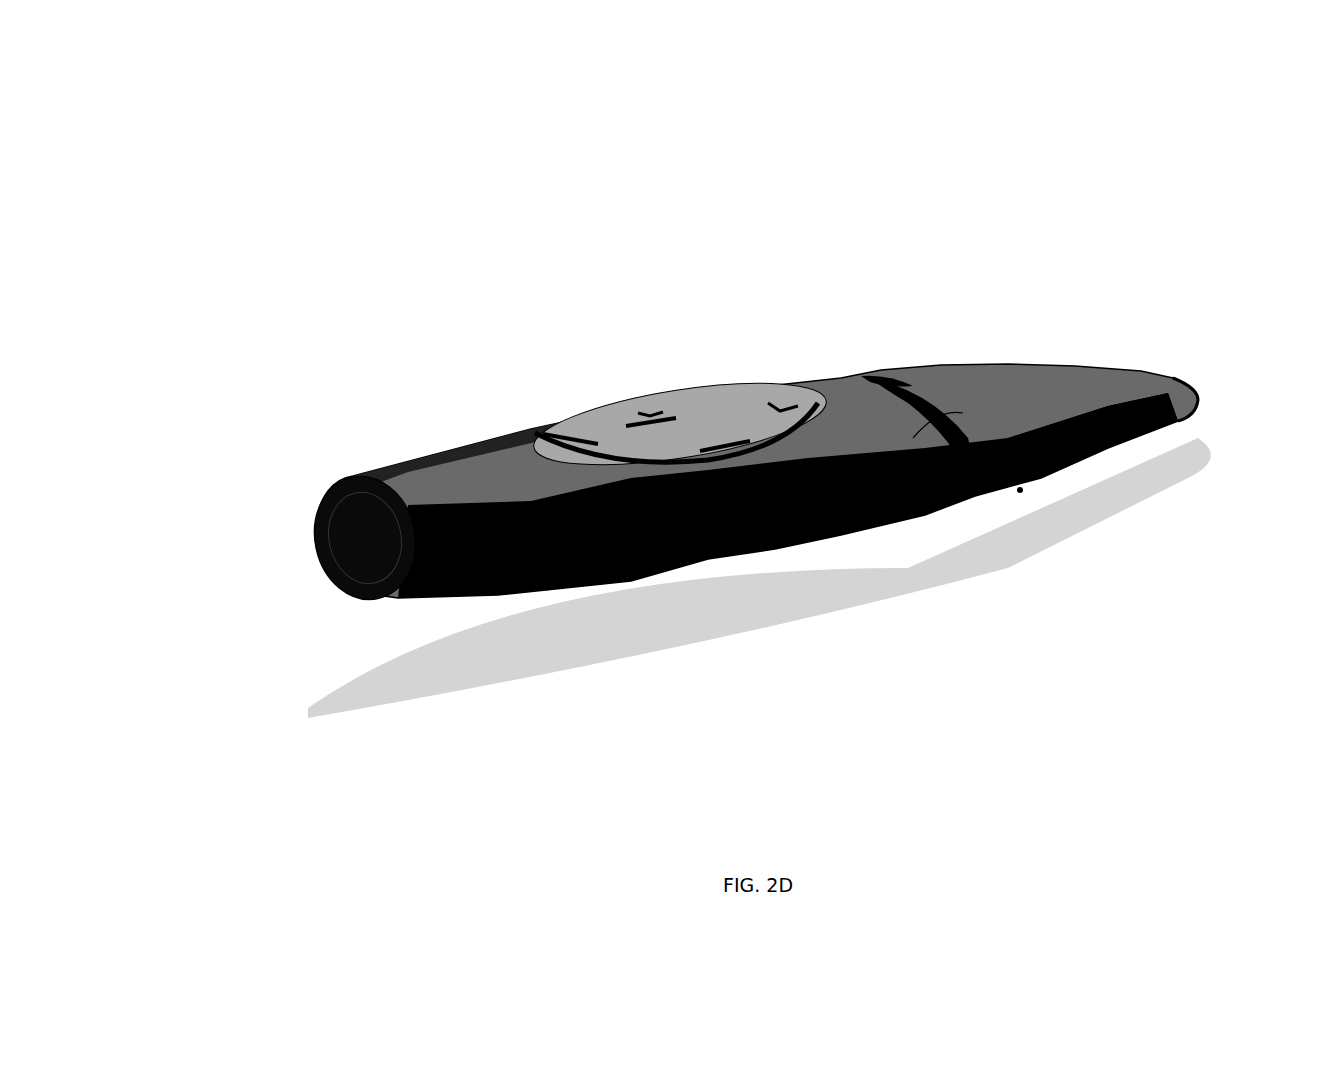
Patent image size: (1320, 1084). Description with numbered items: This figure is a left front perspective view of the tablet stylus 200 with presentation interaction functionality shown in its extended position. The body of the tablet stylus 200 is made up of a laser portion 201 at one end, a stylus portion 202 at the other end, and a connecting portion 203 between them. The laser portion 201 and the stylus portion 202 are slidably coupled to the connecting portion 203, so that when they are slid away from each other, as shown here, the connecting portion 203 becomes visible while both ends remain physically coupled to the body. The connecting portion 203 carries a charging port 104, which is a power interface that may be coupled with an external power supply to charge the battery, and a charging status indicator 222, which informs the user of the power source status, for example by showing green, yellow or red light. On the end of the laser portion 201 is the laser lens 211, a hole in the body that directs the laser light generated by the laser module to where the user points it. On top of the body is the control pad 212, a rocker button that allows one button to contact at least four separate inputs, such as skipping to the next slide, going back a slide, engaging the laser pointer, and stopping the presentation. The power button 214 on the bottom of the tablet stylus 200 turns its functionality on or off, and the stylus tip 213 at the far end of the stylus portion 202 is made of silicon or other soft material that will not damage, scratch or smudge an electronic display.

The tablet stylus 200 is at (1228, 251).
The laser portion 201 is at (397, 452).
The laser lens 211 is at (337, 560).
The control pad 212 is at (590, 415).
The power button 214 is at (520, 585).
The connecting portion 203 is at (910, 510).
The charging port 104 is at (860, 365).
The stylus portion 202 is at (1012, 352).
The stylus tip 213 is at (1177, 365).
The charging status indicator 222 is at (1012, 482).